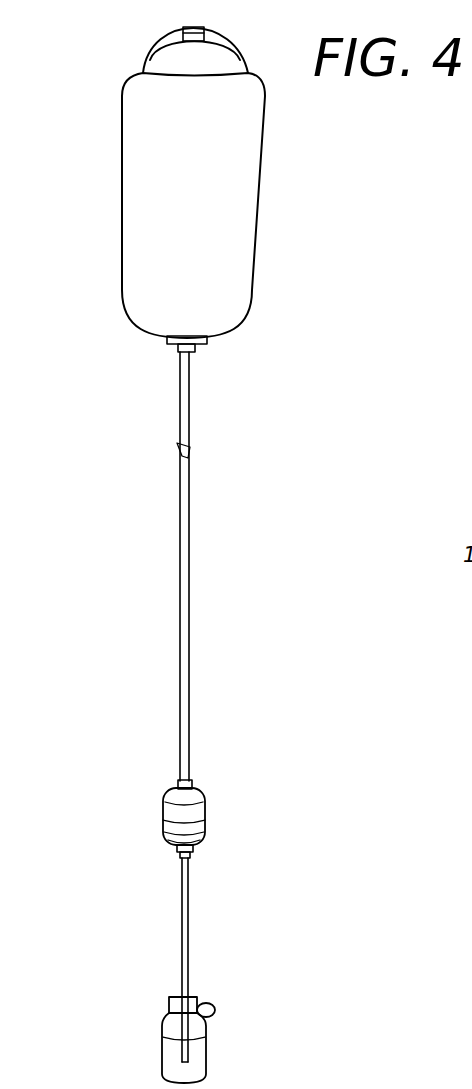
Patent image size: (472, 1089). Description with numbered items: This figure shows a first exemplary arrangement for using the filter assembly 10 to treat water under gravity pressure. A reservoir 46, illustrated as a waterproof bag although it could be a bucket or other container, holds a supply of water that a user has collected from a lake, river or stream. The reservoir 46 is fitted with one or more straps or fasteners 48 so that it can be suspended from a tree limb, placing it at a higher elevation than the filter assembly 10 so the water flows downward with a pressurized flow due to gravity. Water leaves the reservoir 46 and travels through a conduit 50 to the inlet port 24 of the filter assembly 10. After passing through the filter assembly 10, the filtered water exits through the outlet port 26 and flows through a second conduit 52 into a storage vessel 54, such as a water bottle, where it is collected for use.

The filter assembly 10 is at (207, 818).
The inlet port 24 is at (200, 788).
The outlet port 26 is at (192, 856).
The reservoir 46 is at (126, 186).
The straps or fasteners 48 is at (152, 45).
The conduit 50 is at (179, 670).
The conduit 52 is at (185, 889).
The storage vessel 54 is at (205, 995).